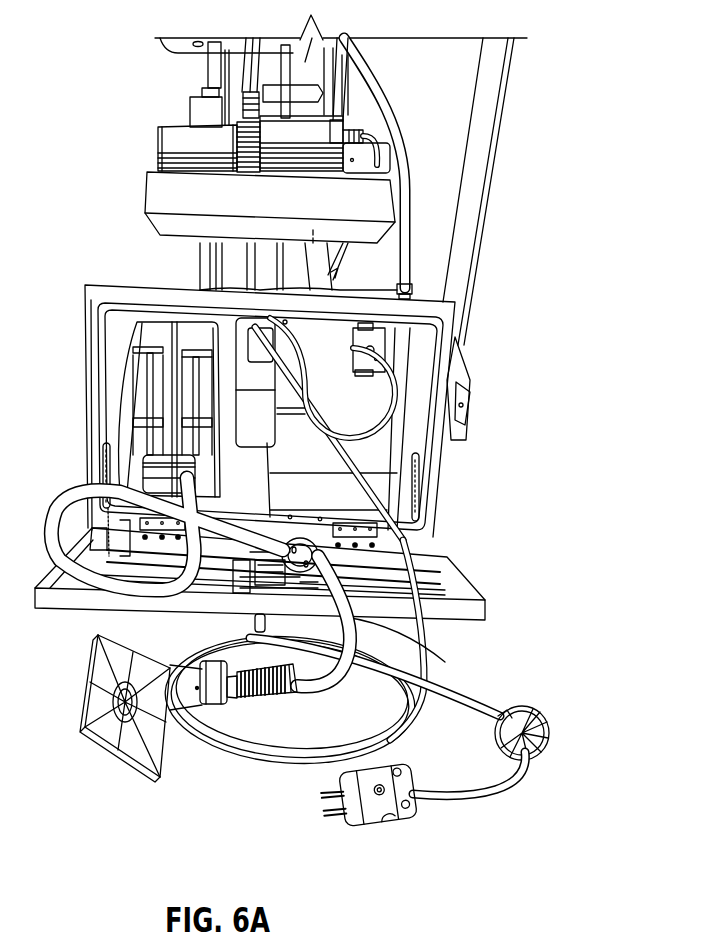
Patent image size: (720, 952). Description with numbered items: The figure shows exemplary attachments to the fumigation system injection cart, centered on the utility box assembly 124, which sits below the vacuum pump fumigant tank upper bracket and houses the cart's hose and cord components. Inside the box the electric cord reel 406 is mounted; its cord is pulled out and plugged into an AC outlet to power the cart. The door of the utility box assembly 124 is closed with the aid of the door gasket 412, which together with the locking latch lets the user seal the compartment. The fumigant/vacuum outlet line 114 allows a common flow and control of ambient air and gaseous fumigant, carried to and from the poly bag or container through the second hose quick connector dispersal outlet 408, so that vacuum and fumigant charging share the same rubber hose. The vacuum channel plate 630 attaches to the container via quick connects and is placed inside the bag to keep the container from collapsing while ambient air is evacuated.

The utility box assembly 124 is at (455, 335).
The electric cord reel 406 is at (248, 345).
The door gasket 412 is at (427, 537).
The fumigant/vacuum outlet line 114 is at (427, 660).
The second hose quick connector dispersal outlet 408 is at (248, 703).
The vacuum channel plate 630 is at (100, 732).